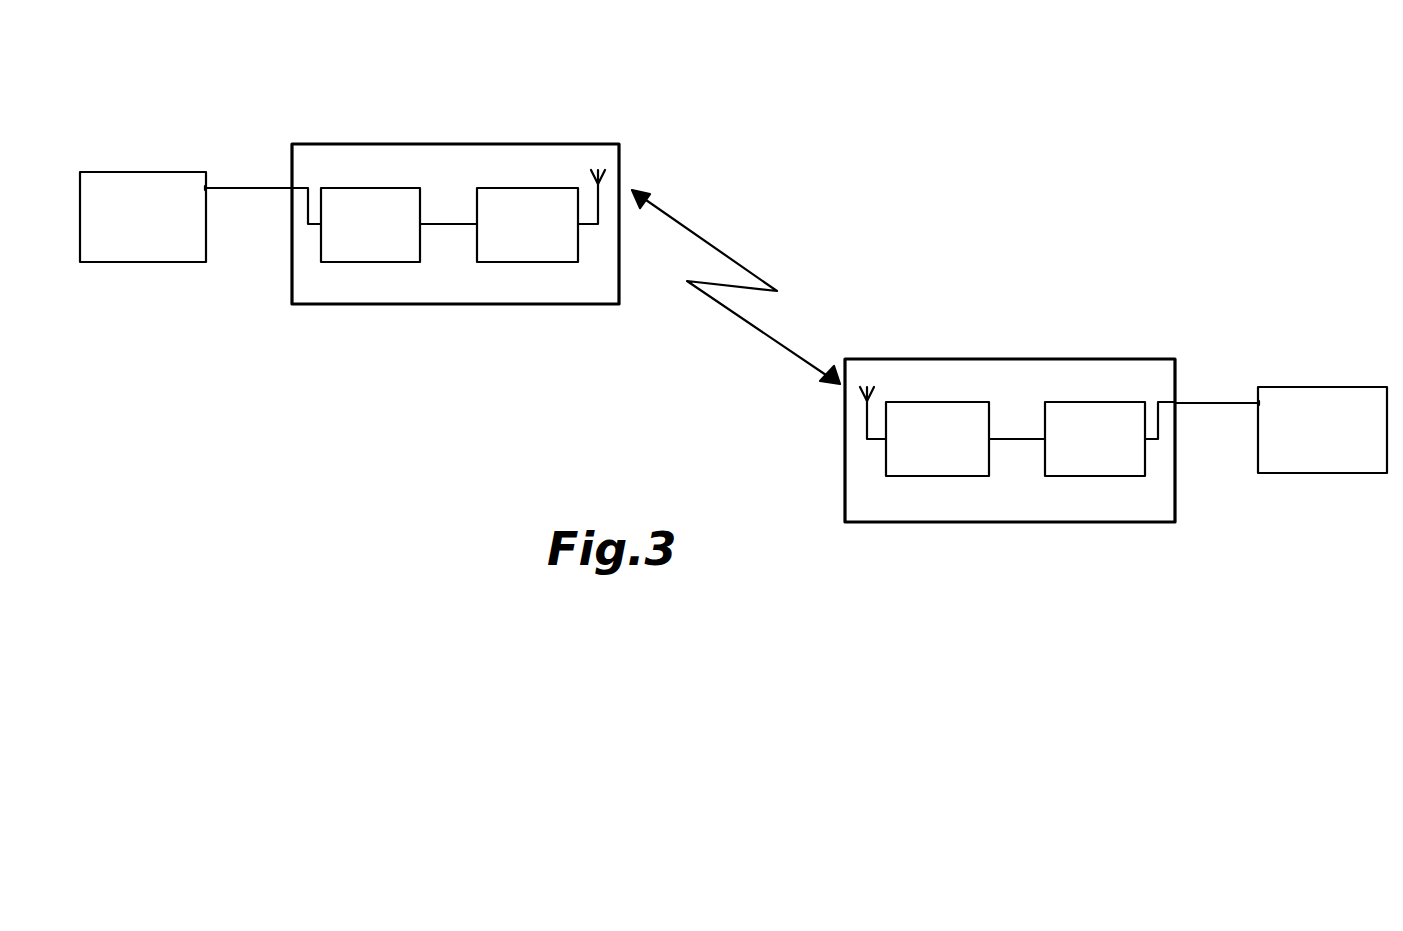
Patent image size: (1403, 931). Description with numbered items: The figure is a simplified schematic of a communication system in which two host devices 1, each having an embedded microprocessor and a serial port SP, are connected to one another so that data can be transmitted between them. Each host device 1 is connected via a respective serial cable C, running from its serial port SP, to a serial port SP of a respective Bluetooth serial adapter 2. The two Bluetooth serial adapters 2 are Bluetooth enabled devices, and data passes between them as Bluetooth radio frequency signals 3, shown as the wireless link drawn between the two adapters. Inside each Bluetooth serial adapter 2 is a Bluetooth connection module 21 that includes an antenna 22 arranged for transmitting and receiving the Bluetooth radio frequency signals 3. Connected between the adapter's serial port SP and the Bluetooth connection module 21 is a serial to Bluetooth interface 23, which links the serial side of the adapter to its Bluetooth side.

The host device 1 is at (133, 210).
The Bluetooth serial adapter 2 is at (440, 143).
The Bluetooth radio frequency signals 3 is at (740, 262).
The Bluetooth connection module 21 is at (509, 213).
The antenna 22 is at (600, 198).
The serial to Bluetooth interface 23 is at (373, 215).
The serial port SP is at (209, 178).
The serial cable C is at (242, 189).